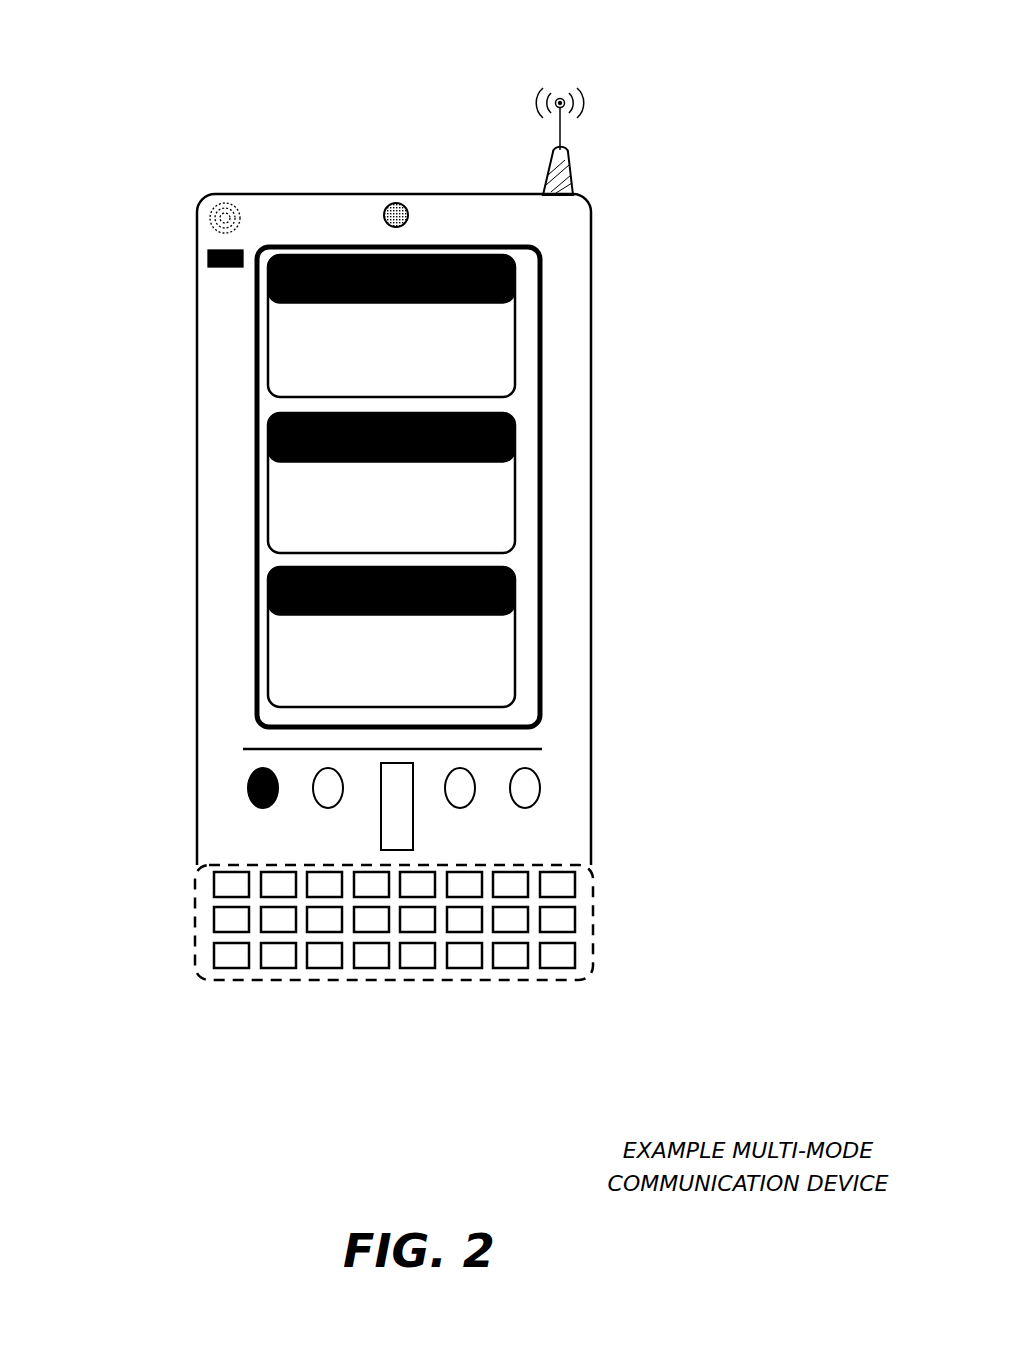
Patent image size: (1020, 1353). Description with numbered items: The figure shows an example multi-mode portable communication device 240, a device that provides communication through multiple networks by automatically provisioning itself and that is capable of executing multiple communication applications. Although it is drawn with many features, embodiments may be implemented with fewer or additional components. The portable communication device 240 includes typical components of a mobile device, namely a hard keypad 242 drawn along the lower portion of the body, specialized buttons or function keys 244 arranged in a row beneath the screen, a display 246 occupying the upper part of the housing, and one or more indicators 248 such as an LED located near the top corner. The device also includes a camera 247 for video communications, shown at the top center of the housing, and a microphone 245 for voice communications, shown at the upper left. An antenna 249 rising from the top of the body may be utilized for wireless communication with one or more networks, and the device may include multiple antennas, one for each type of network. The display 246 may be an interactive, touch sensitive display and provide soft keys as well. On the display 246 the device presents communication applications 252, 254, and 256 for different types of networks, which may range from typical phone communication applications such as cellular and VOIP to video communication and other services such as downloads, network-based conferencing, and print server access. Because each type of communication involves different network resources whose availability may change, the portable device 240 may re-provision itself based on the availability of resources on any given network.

The multi-mode portable communication device 240 is at (322, 48).
The hard keypad 242 is at (196, 950).
The specialized buttons 244 is at (518, 805).
The microphone 245 is at (210, 220).
The display 246 is at (253, 707).
The camera 247 is at (408, 208).
The indicator 248 is at (206, 258).
The antenna 249 is at (567, 155).
The communication application 252 is at (270, 648).
The communication application 254 is at (270, 518).
The communication application 256 is at (270, 340).